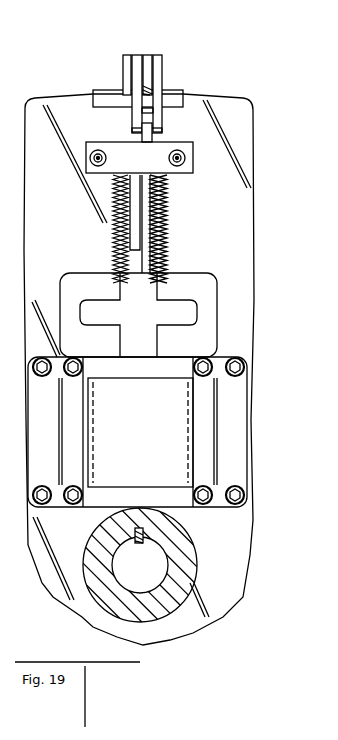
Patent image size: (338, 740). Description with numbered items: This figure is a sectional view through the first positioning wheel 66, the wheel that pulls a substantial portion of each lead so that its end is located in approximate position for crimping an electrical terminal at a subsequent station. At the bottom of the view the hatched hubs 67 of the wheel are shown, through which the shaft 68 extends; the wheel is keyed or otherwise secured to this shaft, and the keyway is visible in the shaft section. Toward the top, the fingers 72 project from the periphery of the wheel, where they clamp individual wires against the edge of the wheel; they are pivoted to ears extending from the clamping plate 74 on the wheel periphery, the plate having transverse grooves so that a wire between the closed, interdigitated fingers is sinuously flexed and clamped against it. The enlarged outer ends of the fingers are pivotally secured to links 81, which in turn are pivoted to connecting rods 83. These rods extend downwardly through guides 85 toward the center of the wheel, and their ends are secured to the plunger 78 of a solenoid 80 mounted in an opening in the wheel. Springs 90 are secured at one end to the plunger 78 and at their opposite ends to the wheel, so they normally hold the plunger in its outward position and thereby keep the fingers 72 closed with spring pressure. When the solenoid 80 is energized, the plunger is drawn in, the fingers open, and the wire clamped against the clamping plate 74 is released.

The first positioning wheel 66 is at (250, 150).
The hubs 67 is at (185, 595).
The shaft 68 is at (157, 557).
The fingers 72 is at (122, 62).
The clamping plate 74 is at (105, 93).
The plunger 78 is at (153, 338).
The solenoid 80 is at (138, 444).
The links 81 is at (162, 117).
The connecting rods 83 is at (133, 205).
The guides 85 is at (188, 153).
The springs 90 is at (120, 232).